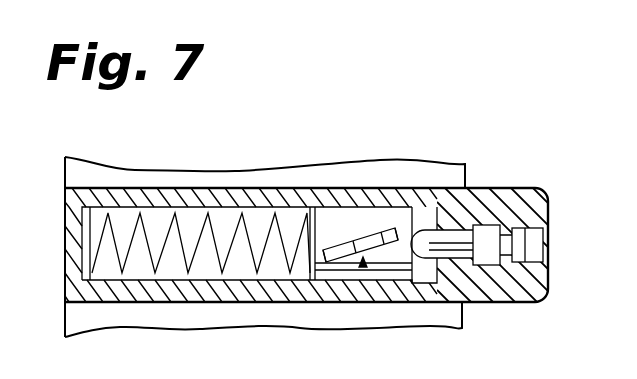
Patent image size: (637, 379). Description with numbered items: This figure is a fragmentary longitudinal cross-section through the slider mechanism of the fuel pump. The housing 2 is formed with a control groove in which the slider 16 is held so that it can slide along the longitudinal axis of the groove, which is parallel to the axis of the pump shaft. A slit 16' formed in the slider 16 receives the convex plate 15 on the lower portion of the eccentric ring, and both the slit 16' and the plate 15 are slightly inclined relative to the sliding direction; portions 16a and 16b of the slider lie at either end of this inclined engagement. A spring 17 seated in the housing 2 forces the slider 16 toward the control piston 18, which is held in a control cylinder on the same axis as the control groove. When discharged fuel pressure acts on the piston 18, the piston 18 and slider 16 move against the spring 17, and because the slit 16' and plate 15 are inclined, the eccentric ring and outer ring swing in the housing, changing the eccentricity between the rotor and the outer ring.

The housing 2 is at (478, 198).
The convex plate 15 is at (357, 240).
The slider 16 is at (339, 210).
The left end of element 16a is at (330, 250).
The slit 16' is at (352, 309).
The right end of element 16b is at (398, 243).
The spring 17 is at (147, 255).
The control piston 18 is at (467, 248).